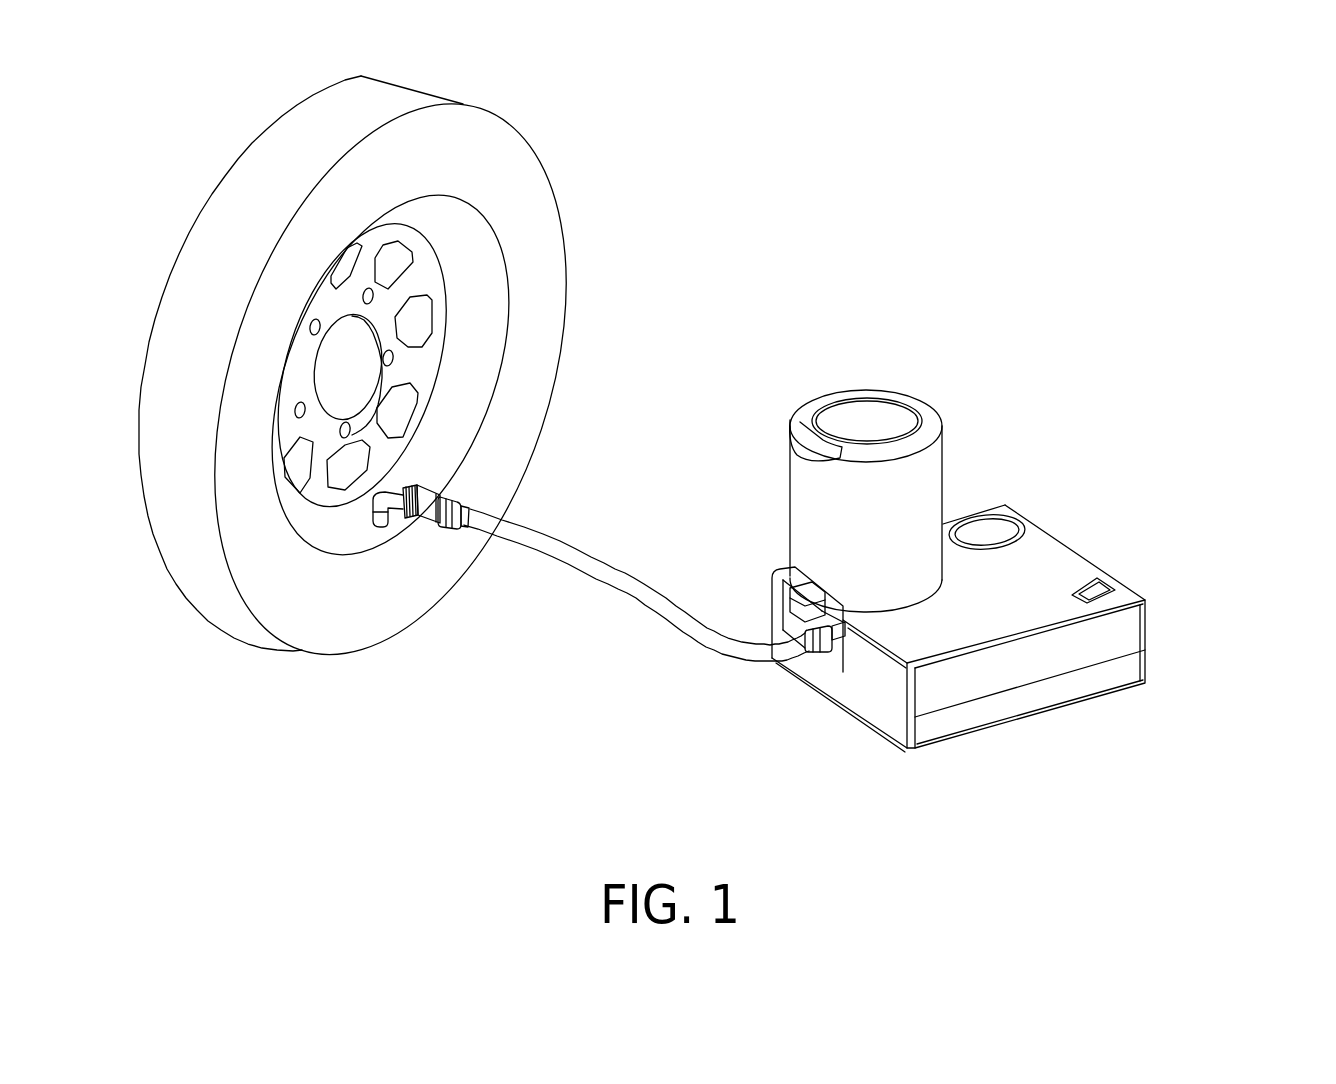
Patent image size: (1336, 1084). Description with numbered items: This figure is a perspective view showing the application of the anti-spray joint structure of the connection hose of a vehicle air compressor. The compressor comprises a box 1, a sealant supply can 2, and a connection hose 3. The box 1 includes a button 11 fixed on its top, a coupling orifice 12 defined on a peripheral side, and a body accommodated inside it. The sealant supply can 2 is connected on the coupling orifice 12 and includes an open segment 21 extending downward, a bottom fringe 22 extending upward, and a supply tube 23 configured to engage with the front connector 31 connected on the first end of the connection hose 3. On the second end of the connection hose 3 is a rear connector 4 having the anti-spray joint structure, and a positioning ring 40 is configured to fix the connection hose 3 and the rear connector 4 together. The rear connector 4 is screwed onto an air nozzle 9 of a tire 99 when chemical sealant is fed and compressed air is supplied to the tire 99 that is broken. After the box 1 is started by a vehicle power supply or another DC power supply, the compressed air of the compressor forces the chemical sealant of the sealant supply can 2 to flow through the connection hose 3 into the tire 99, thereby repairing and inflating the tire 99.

The box 1 is at (1047, 565).
The button 11 is at (1087, 587).
The coupling orifice 12 is at (800, 617).
The sealant supply can 2 is at (948, 436).
The open segment 21 is at (787, 570).
The bottom fringe 22 is at (867, 422).
The supply tube 23 is at (853, 667).
The connection hose 3 is at (642, 598).
The front connector 31 is at (830, 663).
The rear connector 4 is at (430, 496).
The positioning ring 40 is at (448, 523).
The air nozzle 9 is at (397, 493).
The tire 99 is at (232, 608).